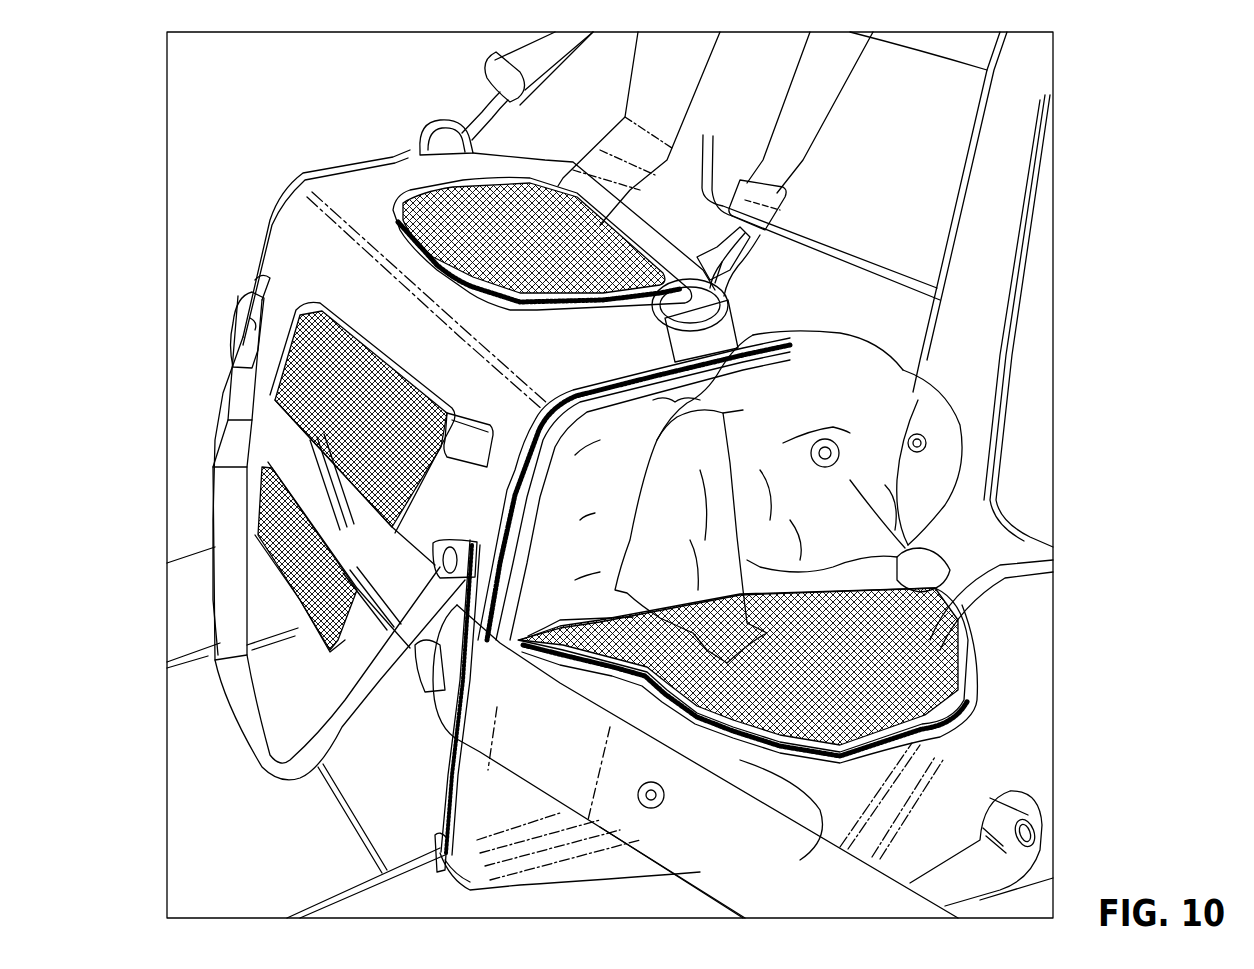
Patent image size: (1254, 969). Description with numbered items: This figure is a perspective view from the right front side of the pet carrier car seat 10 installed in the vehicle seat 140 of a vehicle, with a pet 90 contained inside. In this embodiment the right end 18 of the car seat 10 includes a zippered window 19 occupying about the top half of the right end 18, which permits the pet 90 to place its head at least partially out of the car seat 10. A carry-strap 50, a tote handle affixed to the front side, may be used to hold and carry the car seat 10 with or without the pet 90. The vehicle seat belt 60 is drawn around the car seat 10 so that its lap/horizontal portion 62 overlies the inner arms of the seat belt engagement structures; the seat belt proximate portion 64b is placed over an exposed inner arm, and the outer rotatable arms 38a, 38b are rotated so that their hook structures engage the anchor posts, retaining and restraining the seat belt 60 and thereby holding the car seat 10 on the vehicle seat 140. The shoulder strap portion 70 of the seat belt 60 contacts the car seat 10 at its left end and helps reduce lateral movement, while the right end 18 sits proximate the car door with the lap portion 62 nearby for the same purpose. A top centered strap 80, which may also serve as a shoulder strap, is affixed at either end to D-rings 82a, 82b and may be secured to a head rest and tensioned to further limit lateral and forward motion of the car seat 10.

The pet carrier car seat 10 is at (803, 257).
The right end 18 is at (505, 880).
The zippered window 19 is at (970, 670).
The outer rotatable arm 38a is at (232, 343).
The outer rotatable arm 38b is at (420, 630).
The carry-strap 50 is at (232, 737).
The seat belt 60 is at (700, 893).
The lap/horizontal portion 62 is at (294, 458).
The seat belt proximate portion 64b is at (440, 840).
The shoulder strap portion 70 is at (704, 103).
The top centered strap 80 is at (815, 128).
The D-ring 82a is at (476, 140).
The D-ring 82b is at (733, 310).
The pet 90 is at (882, 352).
The vehicle seat 140 is at (272, 851).